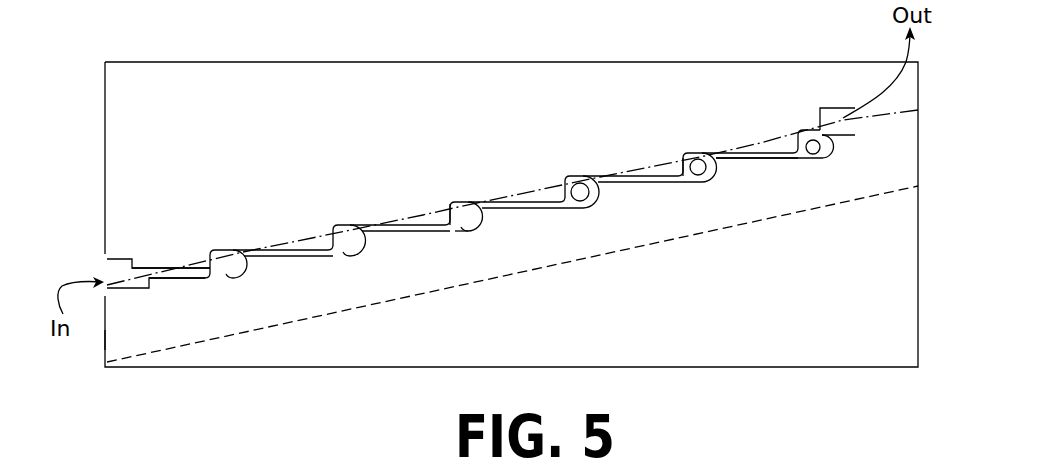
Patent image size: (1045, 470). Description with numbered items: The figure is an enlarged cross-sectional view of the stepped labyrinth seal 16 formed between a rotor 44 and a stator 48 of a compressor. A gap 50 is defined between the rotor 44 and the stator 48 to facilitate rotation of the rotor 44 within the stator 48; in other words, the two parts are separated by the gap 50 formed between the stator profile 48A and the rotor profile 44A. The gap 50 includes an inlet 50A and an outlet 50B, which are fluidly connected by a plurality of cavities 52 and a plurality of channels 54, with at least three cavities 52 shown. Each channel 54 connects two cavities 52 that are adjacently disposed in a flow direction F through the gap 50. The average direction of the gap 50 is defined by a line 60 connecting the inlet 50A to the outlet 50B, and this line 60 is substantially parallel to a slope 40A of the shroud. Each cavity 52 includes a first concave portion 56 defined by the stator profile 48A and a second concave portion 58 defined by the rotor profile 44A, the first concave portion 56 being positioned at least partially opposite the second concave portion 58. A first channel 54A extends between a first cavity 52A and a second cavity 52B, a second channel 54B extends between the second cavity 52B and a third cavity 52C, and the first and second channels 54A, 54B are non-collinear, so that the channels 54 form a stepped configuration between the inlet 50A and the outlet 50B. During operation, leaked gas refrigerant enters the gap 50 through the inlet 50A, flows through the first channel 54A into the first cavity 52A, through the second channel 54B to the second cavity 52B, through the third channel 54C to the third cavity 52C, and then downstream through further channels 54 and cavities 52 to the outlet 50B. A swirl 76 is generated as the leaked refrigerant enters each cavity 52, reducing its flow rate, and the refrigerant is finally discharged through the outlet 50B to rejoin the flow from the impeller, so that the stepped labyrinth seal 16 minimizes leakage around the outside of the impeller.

The stator 48 is at (104, 157).
The rotor 44 is at (104, 338).
The inlet 50A is at (104, 277).
The gap 50 is at (188, 272).
The first channel 54A is at (168, 279).
The first cavity 52A is at (232, 268).
The second channel 54B is at (298, 257).
The second cavity 52B is at (352, 244).
The third channel 54C is at (403, 232).
The third cavity 52C is at (466, 220).
The second concave portion 58 is at (486, 224).
The first concave portion 56 is at (447, 202).
The channels 54 is at (525, 202).
The swirl 76 is at (575, 196).
The rotor profile 44A is at (640, 184).
The cavities 52 is at (698, 152).
The flow direction F is at (683, 184).
The stator profile 48A is at (758, 151).
The line 60 is at (777, 142).
The outlet 50B is at (842, 136).
The stepped labyrinth seal 16 is at (612, 170).
The slope 40A is at (713, 231).